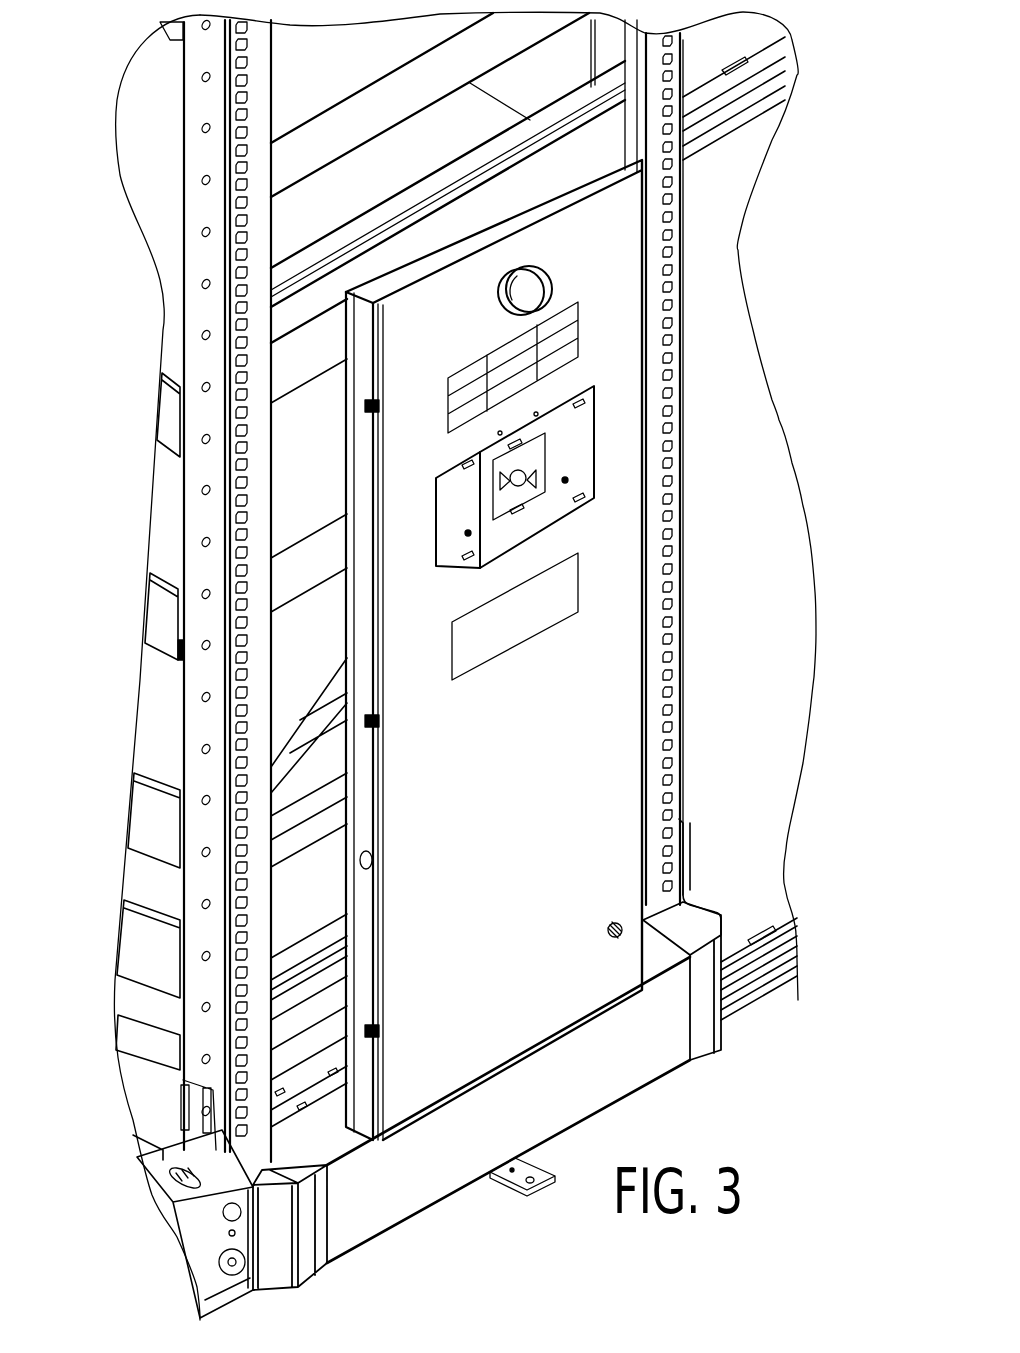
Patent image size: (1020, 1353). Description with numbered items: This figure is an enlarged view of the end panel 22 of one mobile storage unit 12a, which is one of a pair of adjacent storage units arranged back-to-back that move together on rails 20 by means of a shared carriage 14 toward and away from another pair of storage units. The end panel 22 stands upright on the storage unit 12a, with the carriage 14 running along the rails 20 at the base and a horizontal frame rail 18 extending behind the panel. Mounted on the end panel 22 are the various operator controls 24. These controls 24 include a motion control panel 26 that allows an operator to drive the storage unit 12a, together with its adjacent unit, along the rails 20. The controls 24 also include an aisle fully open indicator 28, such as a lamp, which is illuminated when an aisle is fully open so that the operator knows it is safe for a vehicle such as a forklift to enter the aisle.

The storage unit 12a is at (692, 413).
The carriage 14 is at (405, 1195).
The horizontal frame rail 18 is at (284, 247).
The rails 20 is at (752, 990).
The end panel 22 is at (590, 760).
The operator controls 24 is at (512, 532).
The motion control panel 26 is at (557, 505).
The aisle fully open indicator 28 is at (522, 292).